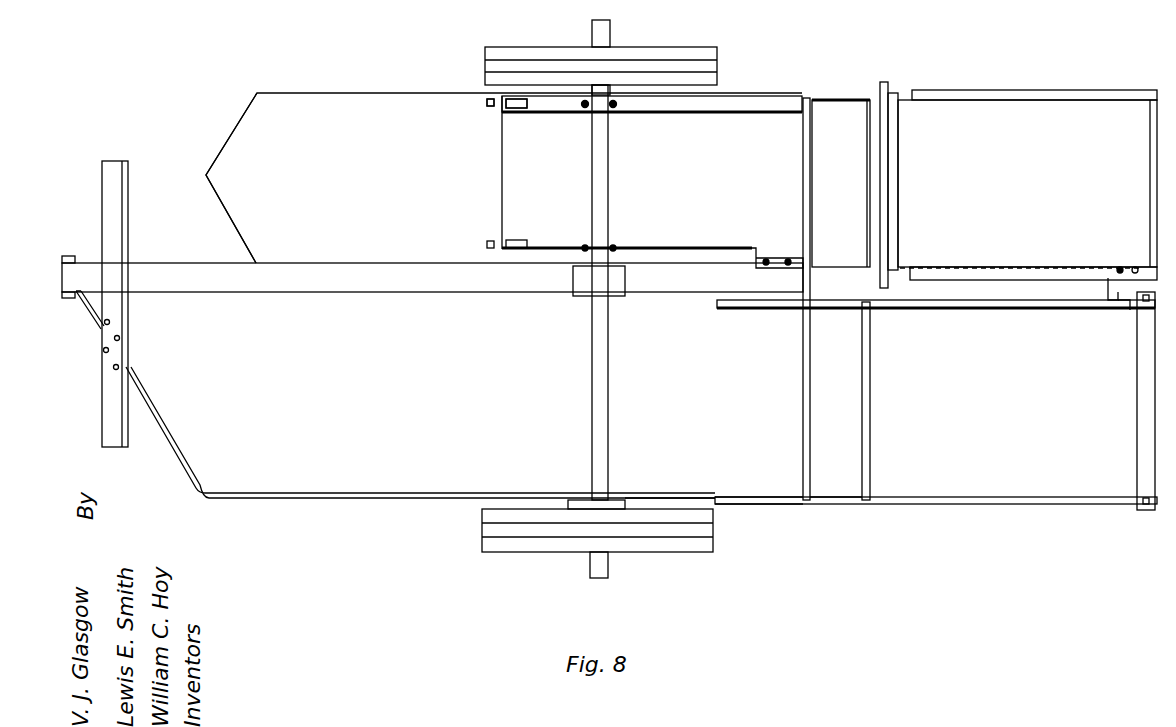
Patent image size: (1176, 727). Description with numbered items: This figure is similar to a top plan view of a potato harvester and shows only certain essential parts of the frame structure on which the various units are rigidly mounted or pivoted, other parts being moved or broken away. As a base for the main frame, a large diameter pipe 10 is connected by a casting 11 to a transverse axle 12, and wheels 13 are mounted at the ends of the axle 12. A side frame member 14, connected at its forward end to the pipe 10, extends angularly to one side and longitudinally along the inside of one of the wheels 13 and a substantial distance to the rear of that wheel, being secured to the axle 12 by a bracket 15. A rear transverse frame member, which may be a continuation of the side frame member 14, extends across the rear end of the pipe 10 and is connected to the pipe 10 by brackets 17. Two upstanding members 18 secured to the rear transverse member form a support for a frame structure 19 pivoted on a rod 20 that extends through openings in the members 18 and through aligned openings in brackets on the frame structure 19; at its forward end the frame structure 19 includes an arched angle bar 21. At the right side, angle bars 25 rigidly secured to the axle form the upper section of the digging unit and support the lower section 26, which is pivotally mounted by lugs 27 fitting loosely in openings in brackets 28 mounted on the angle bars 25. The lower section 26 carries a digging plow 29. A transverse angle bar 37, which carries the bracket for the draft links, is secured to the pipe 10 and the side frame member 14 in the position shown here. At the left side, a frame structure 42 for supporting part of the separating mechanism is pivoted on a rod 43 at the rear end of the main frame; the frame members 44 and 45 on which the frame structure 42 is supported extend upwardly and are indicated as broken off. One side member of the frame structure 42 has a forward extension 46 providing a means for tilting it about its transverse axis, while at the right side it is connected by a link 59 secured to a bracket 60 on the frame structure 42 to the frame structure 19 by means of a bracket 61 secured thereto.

The pipe 10 is at (352, 292).
The casting 11 is at (612, 286).
The transverse axle 12 is at (605, 196).
The wheels 13 is at (490, 52).
The side frame member 14 is at (442, 490).
The bracket 15 is at (650, 480).
The brackets 17 is at (774, 300).
The upstanding members 18 is at (852, 102).
The frame structure 19 is at (1100, 96).
The rod 20 is at (884, 96).
The arched angle bar 21 is at (900, 180).
The angle bars 25 is at (700, 114).
The lower section of the digging unit 26 is at (432, 92).
The lugs 27 is at (506, 108).
The brackets 28 is at (510, 104).
The digging plow 29 is at (228, 152).
The transverse angle bar 37 is at (118, 311).
The frame structure 42 is at (992, 504).
The rod 43 is at (870, 425).
The frame member 44 is at (814, 308).
The frame member 45 is at (826, 497).
The forward extension 46 is at (722, 504).
The link 59 is at (1106, 288).
The bracket 60 is at (1130, 306).
The bracket 61 is at (1112, 268).